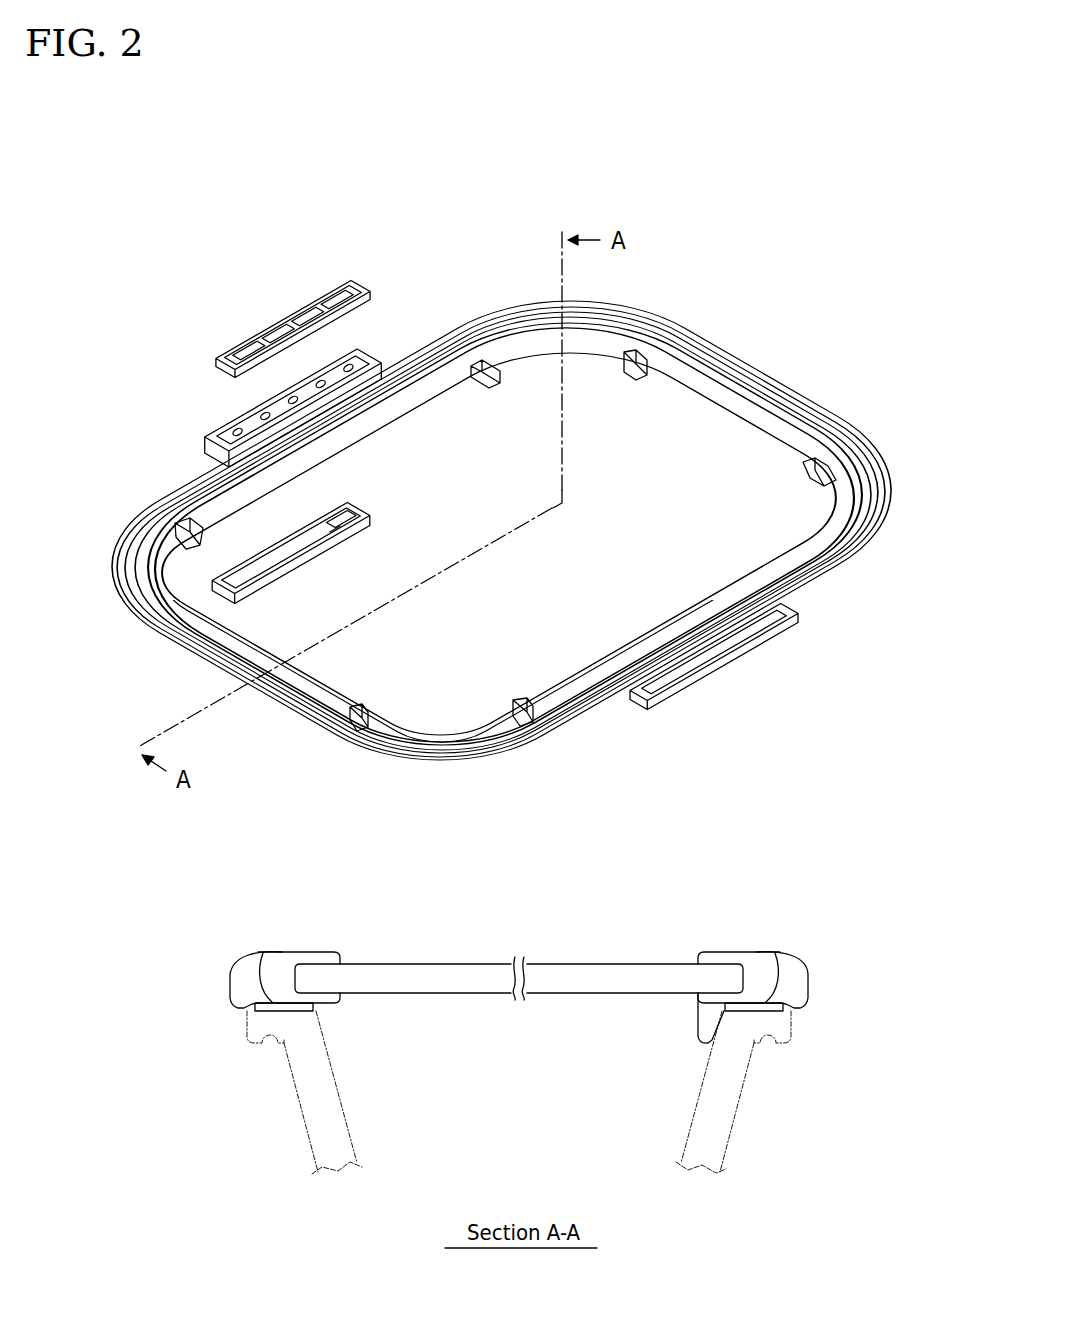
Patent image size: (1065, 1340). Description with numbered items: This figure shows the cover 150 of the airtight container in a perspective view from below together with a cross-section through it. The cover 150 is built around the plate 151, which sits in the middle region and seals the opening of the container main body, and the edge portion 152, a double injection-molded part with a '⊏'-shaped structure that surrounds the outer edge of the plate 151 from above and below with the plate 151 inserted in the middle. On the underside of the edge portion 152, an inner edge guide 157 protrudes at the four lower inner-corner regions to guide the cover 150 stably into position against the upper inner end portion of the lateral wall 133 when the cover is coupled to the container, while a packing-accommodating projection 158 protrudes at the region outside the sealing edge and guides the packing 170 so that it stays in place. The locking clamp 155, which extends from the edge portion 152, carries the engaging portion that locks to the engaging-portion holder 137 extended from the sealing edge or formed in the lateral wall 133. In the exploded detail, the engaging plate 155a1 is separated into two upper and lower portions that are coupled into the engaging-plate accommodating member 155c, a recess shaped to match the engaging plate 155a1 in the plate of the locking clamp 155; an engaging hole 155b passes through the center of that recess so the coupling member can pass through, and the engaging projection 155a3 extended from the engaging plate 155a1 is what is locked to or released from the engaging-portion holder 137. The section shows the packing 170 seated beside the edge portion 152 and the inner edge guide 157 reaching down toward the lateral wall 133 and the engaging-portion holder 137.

The cover 150 is at (224, 186).
The plate 151 is at (557, 656).
The edge portion 152 is at (315, 957).
The locking clamp 155 is at (84, 362).
The engaging plate 155a1 is at (309, 318).
The engaging projection 155a3 is at (336, 532).
The engaging hole 155b is at (232, 437).
The engaging-plate accommodating member 155c is at (244, 418).
The inner edge guide 157 is at (845, 494).
The packing-accommodating projection 158 is at (723, 390).
The packing 170 is at (876, 521).
The lateral wall 133 is at (303, 1127).
The engaging-portion holder 137 is at (787, 1042).